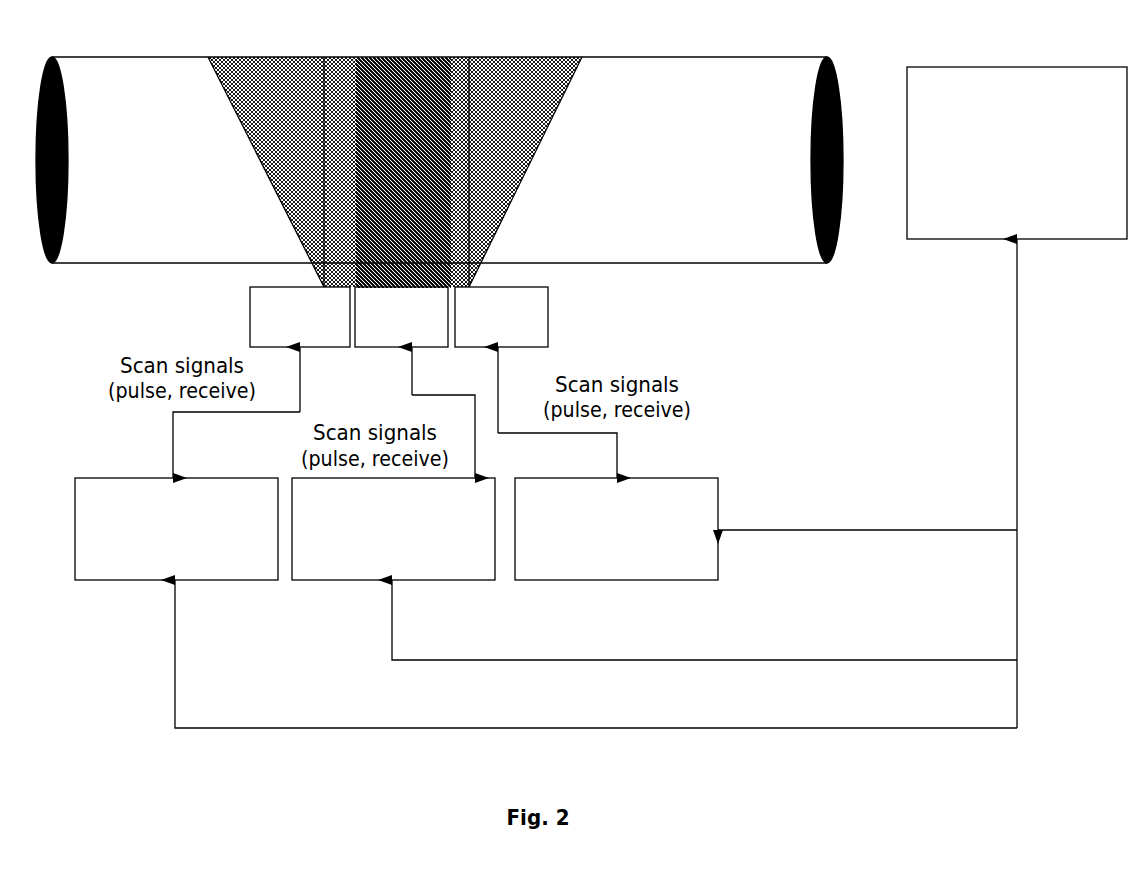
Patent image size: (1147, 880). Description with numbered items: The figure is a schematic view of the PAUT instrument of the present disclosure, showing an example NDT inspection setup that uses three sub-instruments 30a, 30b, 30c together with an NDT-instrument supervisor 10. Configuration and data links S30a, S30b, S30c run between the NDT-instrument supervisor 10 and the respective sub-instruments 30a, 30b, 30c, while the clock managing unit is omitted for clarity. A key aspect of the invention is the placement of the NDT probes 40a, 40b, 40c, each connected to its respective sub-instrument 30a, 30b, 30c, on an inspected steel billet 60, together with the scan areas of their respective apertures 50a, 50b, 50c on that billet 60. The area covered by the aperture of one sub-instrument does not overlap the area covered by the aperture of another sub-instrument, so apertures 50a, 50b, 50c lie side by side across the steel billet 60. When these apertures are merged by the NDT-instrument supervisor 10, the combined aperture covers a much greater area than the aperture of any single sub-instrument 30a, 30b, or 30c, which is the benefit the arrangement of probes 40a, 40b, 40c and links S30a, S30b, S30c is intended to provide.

The NDT-instrument supervisor 10 is at (1102, 213).
The sub-instrument 30a is at (157, 567).
The sub-instrument 30b is at (374, 567).
The sub-instrument 30c is at (597, 567).
The NDT probe 40a is at (260, 335).
The NDT probe 40b is at (377, 333).
The NDT probe 40c is at (533, 333).
The aperture 50a is at (303, 197).
The aperture 50b is at (440, 88).
The aperture 50c is at (480, 208).
The steel billet 60 is at (136, 210).
The configuration and data link S30a is at (596, 682).
The configuration and data link S30b is at (704, 646).
The configuration and data link S30c is at (867, 483).